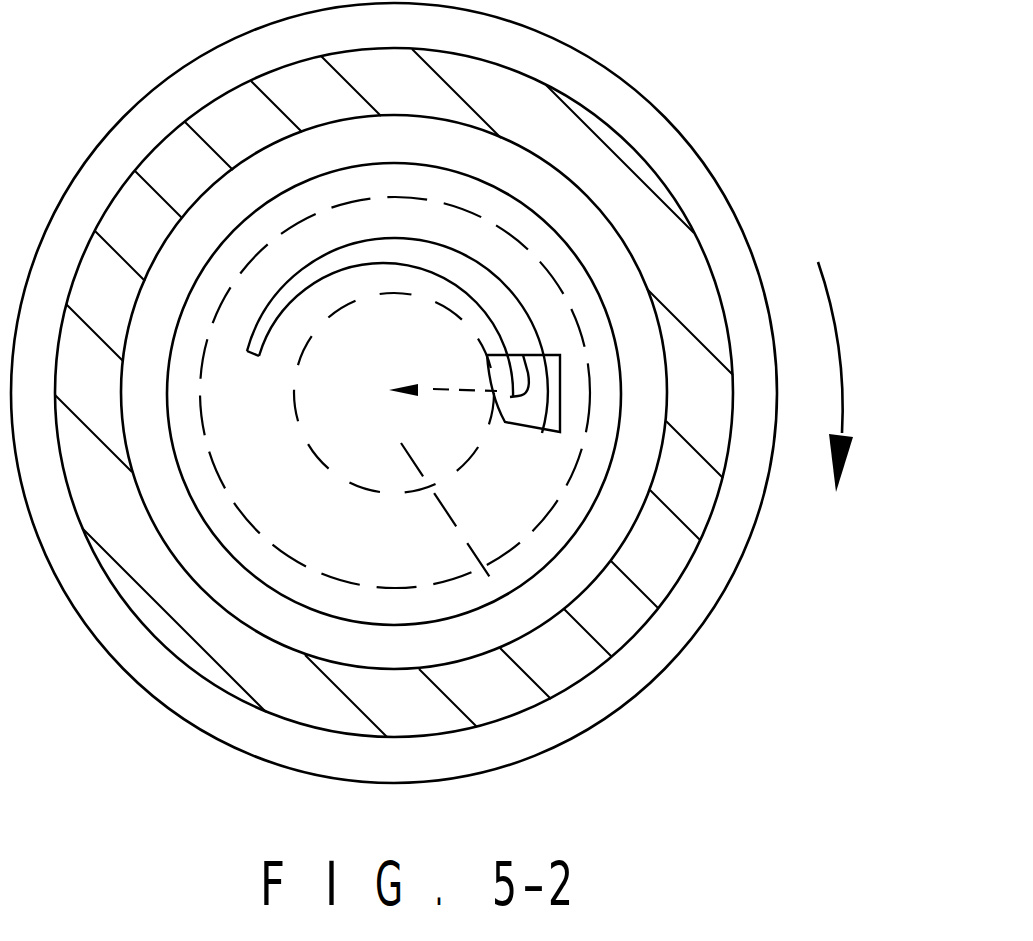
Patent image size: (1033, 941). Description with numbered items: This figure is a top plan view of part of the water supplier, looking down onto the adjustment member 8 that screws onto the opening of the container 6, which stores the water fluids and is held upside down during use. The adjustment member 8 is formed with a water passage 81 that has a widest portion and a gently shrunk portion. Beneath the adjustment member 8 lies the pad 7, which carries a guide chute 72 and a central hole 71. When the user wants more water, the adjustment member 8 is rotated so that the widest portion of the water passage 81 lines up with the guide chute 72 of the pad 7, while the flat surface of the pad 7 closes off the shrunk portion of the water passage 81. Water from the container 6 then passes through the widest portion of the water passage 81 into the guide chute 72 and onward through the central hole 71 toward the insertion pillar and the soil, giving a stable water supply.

The adjustment member 8 is at (620, 80).
The water passage 81 is at (530, 411).
The pad 7 is at (560, 490).
The central hole 71 is at (543, 640).
The guide chute 72 is at (560, 372).
The container 6 is at (618, 197).